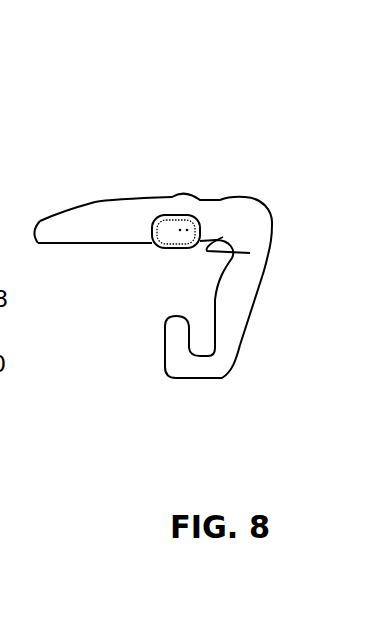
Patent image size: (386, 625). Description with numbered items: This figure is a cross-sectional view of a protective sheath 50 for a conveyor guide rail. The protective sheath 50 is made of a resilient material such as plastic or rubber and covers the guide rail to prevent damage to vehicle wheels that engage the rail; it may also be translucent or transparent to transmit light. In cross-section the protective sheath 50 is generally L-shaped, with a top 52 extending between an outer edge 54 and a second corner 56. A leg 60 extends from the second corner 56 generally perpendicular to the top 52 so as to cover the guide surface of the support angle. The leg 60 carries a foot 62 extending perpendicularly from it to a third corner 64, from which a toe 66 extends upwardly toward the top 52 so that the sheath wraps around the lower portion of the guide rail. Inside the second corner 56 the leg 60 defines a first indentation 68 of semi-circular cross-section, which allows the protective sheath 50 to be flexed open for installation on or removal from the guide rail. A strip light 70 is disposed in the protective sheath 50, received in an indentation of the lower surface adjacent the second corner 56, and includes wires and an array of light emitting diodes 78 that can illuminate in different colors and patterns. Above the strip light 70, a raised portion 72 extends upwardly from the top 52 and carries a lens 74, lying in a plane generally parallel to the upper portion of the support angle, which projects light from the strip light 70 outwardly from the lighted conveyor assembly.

The protective sheath 50 is at (224, 193).
The top 52 is at (56, 218).
The outer edge 54 is at (42, 221).
The second corner 56 is at (258, 205).
The leg 60 is at (262, 275).
The foot 62 is at (203, 377).
The third corner 64 is at (170, 372).
The toe 66 is at (168, 323).
The first indentation 68 is at (250, 253).
The strip light 70 is at (175, 222).
The raised portion 72 is at (75, 208).
The lens 74 is at (118, 200).
The light emitting diodes 78 is at (163, 232).